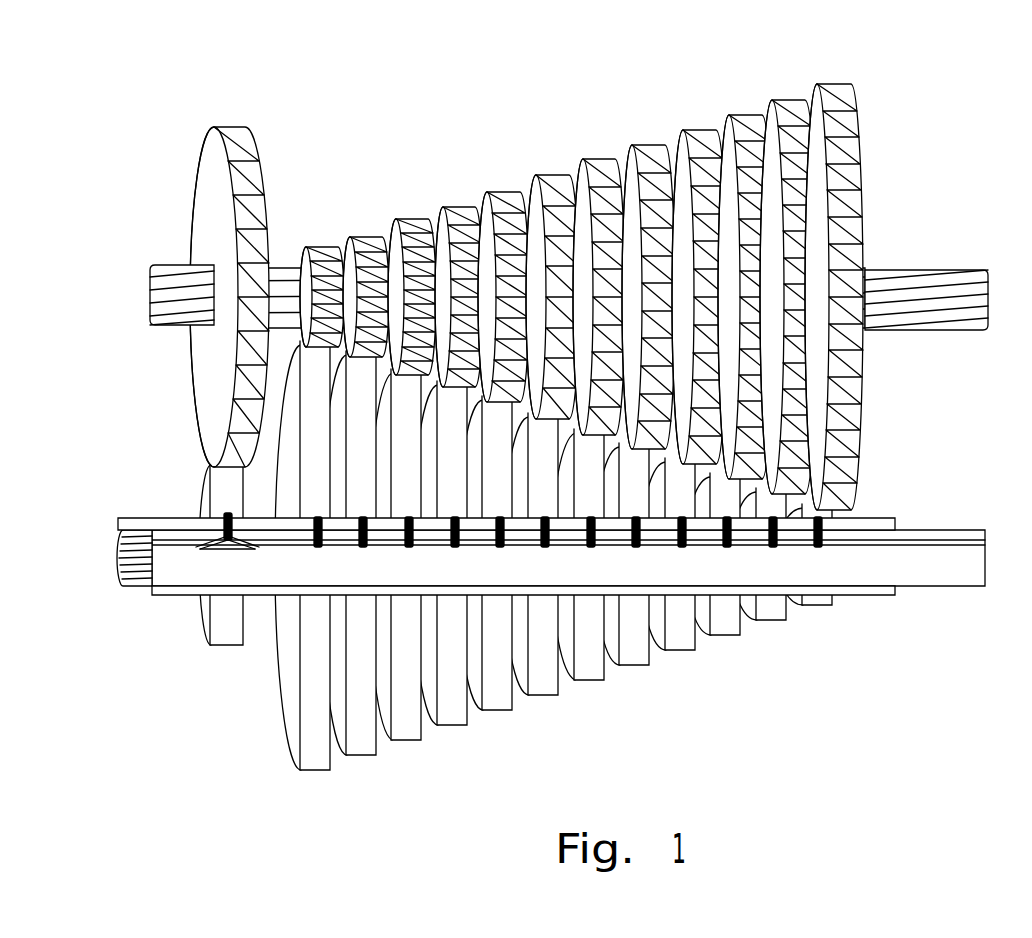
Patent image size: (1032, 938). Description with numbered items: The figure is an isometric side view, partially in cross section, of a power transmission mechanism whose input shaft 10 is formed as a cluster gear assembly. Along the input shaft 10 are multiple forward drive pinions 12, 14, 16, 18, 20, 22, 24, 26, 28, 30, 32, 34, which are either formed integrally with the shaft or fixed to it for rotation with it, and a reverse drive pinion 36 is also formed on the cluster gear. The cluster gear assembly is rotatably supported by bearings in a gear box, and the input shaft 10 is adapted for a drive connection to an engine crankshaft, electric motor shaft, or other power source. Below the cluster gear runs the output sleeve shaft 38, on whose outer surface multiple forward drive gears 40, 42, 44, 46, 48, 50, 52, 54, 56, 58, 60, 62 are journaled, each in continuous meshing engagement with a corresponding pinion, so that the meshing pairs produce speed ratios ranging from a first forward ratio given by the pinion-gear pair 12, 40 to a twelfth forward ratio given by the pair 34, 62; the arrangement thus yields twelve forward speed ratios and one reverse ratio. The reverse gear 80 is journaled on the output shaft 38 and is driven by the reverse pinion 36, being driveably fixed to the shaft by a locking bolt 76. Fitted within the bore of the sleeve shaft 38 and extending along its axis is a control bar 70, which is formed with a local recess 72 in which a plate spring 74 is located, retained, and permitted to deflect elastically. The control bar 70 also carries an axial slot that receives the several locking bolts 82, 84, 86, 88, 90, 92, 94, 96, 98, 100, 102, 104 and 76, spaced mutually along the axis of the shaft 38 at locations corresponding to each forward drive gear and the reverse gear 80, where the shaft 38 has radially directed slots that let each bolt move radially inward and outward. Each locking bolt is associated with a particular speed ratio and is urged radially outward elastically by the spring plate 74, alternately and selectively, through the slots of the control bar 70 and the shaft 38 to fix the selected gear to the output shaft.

The input shaft 10 is at (928, 273).
The forward drive pinion 12 is at (317, 247).
The forward drive pinion 14 is at (360, 235).
The forward drive pinion 16 is at (413, 218).
The forward drive pinion 18 is at (455, 204).
The forward drive pinion 20 is at (503, 190).
The forward drive pinion 22 is at (548, 174).
The forward drive pinion 24 is at (592, 158).
The forward drive pinion 26 is at (642, 144).
The forward drive pinion 28 is at (688, 129).
The forward drive pinion 30 is at (728, 114).
The forward drive pinion 32 is at (775, 99).
The forward drive pinion 34 is at (823, 83).
The reverse drive pinion 36 is at (232, 126).
The sleeve shaft 38 is at (132, 518).
The forward drive gear 40 is at (320, 760).
The forward drive gear 42 is at (366, 745).
The forward drive gear 44 is at (411, 730).
The forward drive gear 46 is at (457, 715).
The forward drive gear 48 is at (502, 700).
The forward drive gear 50 is at (548, 685).
The forward drive gear 52 is at (594, 670).
The forward drive gear 54 is at (639, 655).
The forward drive gear 56 is at (685, 640).
The forward drive gear 58 is at (730, 625).
The forward drive gear 60 is at (776, 610).
The forward drive gear 62 is at (822, 595).
The control bar 70 is at (162, 567).
The local recess 72 is at (205, 552).
The plate spring 74 is at (245, 538).
The locking bolt 76 is at (224, 516).
The reverse drive gear 80 is at (222, 642).
The locking bolt 82 is at (318, 548).
The locking bolt 84 is at (363, 548).
The locking bolt 86 is at (409, 548).
The locking bolt 88 is at (455, 548).
The locking bolt 90 is at (500, 548).
The locking bolt 92 is at (545, 548).
The locking bolt 94 is at (591, 548).
The locking bolt 96 is at (636, 548).
The locking bolt 98 is at (682, 548).
The locking bolt 100 is at (727, 548).
The locking bolt 102 is at (773, 548).
The locking bolt 104 is at (818, 548).